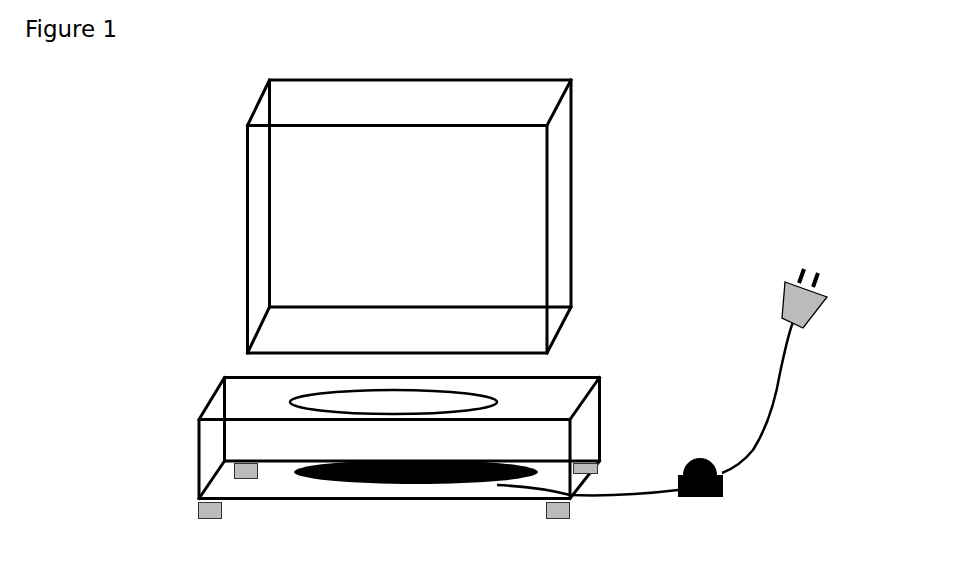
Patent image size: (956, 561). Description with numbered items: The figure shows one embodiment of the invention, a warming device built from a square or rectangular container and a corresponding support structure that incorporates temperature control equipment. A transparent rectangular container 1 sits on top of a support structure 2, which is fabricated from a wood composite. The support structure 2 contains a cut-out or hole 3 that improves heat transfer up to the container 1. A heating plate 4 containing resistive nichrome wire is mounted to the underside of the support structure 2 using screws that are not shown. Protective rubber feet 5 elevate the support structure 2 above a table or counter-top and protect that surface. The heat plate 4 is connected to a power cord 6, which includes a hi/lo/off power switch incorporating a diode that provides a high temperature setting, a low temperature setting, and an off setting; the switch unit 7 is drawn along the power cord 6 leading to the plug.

The transparent rectangular container 1 is at (448, 216).
The support structure 2 is at (594, 374).
The cut-out or hole 3 is at (393, 403).
The heating plate 4 is at (368, 491).
The protective rubber feet 5 is at (398, 499).
The power cord 6 is at (662, 382).
The control unit 7 is at (714, 487).